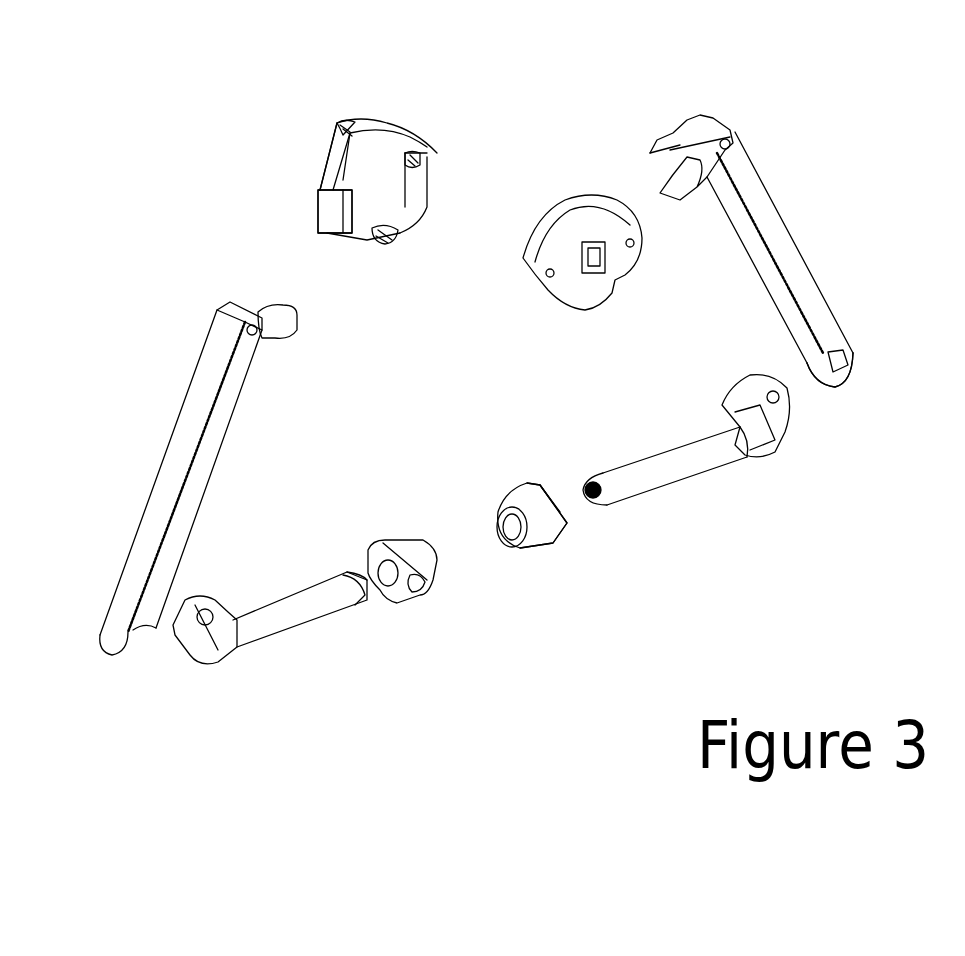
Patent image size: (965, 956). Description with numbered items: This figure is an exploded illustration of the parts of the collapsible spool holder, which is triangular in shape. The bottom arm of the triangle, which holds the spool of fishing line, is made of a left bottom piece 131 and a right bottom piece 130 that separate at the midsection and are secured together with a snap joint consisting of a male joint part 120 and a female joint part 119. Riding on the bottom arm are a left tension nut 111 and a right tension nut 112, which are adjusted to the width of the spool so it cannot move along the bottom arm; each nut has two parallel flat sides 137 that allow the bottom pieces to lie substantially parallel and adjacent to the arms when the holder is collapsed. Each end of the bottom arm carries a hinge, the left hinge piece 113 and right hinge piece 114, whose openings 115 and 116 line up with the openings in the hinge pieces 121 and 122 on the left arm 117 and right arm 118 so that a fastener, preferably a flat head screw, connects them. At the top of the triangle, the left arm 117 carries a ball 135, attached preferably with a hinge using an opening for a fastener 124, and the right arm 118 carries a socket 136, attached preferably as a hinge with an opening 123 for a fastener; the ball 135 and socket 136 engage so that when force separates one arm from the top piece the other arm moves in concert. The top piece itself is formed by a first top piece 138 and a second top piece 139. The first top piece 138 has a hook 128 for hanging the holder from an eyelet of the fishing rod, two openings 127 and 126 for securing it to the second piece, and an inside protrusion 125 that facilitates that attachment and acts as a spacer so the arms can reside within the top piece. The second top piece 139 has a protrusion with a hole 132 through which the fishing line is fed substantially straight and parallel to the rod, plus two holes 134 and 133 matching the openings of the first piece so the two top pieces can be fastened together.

The left tension nut 111 is at (412, 580).
The right tension nut 112 is at (560, 533).
The left hinge piece 113 is at (218, 643).
The right hinge piece 114 is at (763, 433).
The opening in left hinge piece 115 is at (210, 617).
The opening in right hinge piece 116 is at (770, 398).
The left arm 117 is at (170, 482).
The right arm 118 is at (787, 263).
The female joint part 119 is at (373, 587).
The male joint part 120 is at (603, 500).
The hinge piece on left arm 121 is at (123, 647).
The hinge piece on right arm 122 is at (847, 367).
The opening for fastener 123 is at (730, 133).
The opening for fastener 124 is at (240, 325).
The protrusion 125 is at (393, 250).
The opening 126 is at (325, 215).
The opening 127 is at (417, 167).
The hook 128 is at (340, 130).
The right bottom piece 130 is at (683, 467).
The left bottom piece 131 is at (283, 613).
The hole in protrusion 132 is at (598, 273).
The hole 133 is at (638, 245).
The hole 134 is at (548, 275).
The ball 135 is at (283, 323).
The socket 136 is at (663, 138).
The parallel flat sides 137 is at (540, 508).
The first top piece 138 is at (385, 165).
The second top piece 139 is at (575, 197).